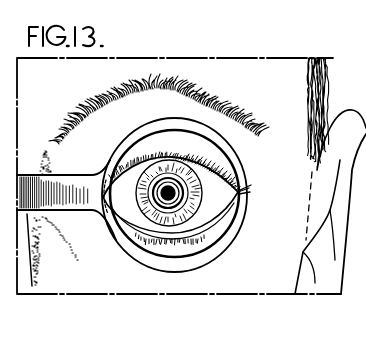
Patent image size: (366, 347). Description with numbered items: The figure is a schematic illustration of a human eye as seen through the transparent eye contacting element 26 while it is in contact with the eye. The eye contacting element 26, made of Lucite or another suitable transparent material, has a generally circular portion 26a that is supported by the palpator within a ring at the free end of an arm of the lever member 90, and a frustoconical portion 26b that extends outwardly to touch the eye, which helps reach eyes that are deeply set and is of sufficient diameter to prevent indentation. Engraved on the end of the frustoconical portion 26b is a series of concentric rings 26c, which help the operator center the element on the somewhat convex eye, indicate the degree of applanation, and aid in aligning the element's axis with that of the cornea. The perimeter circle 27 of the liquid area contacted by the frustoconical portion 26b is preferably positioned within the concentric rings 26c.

The lever member 90 is at (47, 168).
The eye contacting element 26 is at (196, 157).
The circular portion 26a is at (133, 156).
The frustoconical portion 26b is at (148, 206).
The concentric rings 26c is at (184, 199).
The perimeter circle 27 is at (154, 192).